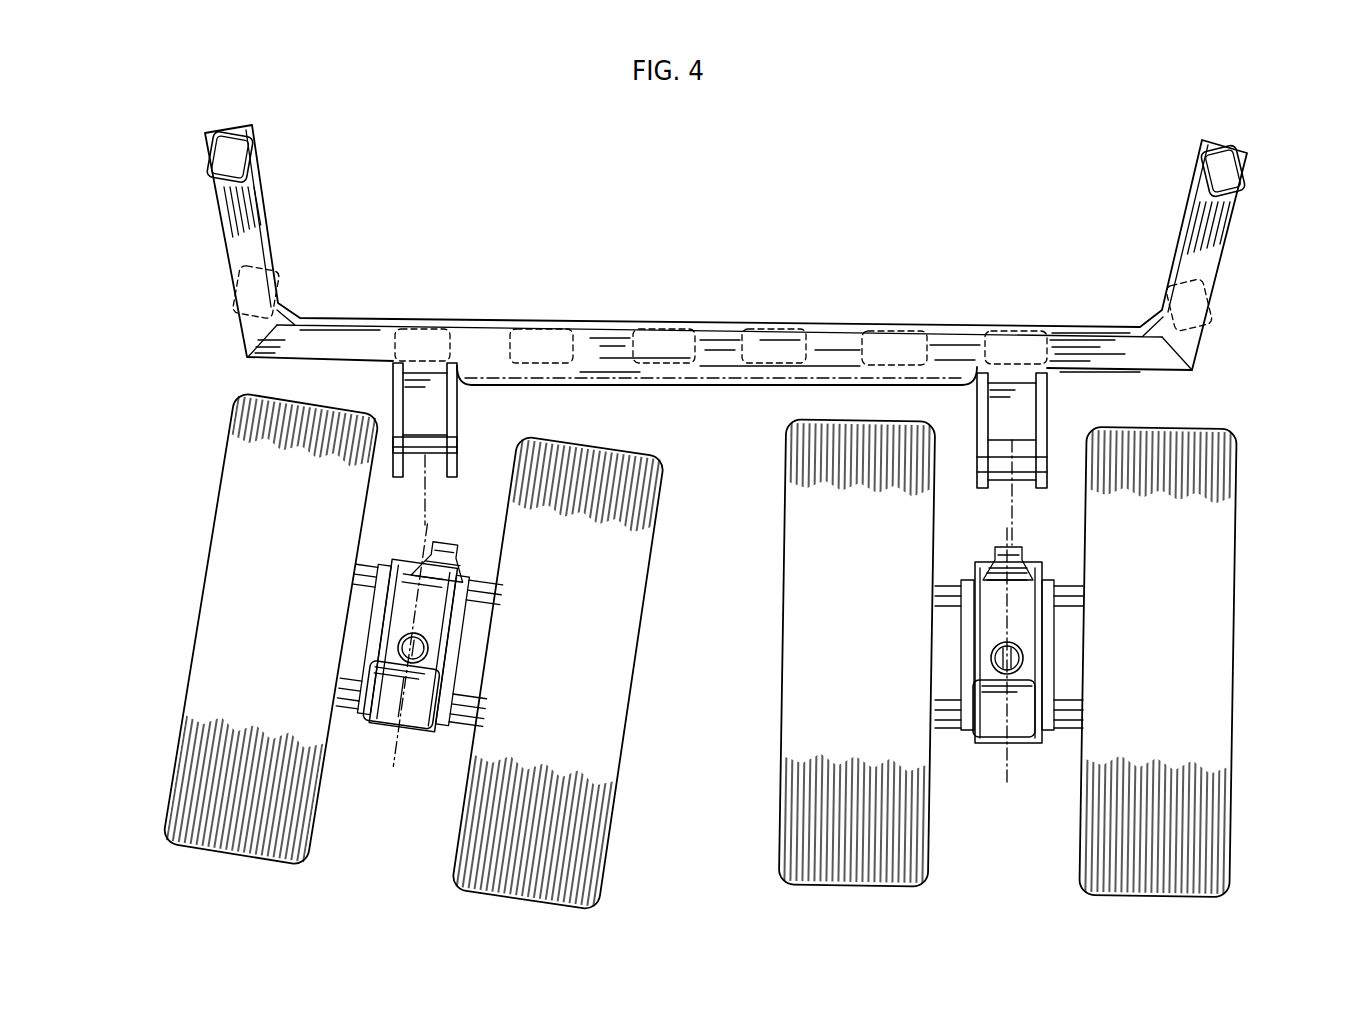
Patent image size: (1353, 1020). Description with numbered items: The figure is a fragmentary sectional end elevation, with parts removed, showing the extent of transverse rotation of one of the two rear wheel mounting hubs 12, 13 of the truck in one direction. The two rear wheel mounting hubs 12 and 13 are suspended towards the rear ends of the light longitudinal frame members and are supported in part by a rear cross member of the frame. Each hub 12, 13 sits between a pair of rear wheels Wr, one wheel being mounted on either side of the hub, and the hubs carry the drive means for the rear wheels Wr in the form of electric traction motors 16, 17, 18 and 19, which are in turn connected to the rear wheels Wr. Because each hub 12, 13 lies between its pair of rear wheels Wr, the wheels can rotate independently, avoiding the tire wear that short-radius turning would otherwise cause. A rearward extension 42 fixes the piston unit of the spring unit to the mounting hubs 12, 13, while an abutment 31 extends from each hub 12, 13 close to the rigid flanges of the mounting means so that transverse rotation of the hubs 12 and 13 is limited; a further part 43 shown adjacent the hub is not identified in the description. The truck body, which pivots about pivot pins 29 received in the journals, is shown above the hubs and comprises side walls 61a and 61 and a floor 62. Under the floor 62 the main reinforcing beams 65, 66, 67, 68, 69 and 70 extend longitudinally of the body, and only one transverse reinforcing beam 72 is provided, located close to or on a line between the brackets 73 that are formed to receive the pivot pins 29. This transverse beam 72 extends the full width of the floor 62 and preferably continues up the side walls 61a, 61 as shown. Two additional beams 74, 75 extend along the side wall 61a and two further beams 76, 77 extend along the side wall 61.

The rear wheel mounting hub 12 is at (383, 747).
The rear wheel mounting hub 13 is at (984, 738).
The electric traction motor 16 is at (355, 667).
The electric traction motor 17 is at (467, 663).
The electric traction motor 18 is at (945, 622).
The electric traction motor 19 is at (1070, 638).
The pivot pin 29 is at (440, 457).
The abutment 31 is at (443, 540).
The rearward extension 42 is at (398, 647).
The bolt 43 is at (983, 655).
The side wall 61 is at (1182, 208).
The side wall 61a is at (273, 226).
The floor 62 is at (717, 322).
The longitudinal reinforcing beam 65 is at (1008, 338).
The longitudinal reinforcing beam 66 is at (897, 340).
The longitudinal reinforcing beam 67 is at (775, 340).
The longitudinal reinforcing beam 68 is at (667, 340).
The longitudinal reinforcing beam 69 is at (545, 347).
The longitudinal reinforcing beam 70 is at (433, 345).
The transverse reinforcing beam 72 is at (235, 227).
The bracket 73 is at (433, 410).
The side beam 74 is at (210, 170).
The side beam 75 is at (230, 296).
The side beam 76 is at (1243, 188).
The side beam 77 is at (1203, 312).
The rear wheel Wr is at (232, 508).